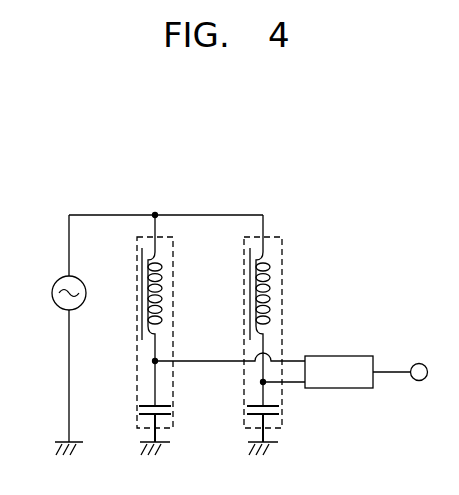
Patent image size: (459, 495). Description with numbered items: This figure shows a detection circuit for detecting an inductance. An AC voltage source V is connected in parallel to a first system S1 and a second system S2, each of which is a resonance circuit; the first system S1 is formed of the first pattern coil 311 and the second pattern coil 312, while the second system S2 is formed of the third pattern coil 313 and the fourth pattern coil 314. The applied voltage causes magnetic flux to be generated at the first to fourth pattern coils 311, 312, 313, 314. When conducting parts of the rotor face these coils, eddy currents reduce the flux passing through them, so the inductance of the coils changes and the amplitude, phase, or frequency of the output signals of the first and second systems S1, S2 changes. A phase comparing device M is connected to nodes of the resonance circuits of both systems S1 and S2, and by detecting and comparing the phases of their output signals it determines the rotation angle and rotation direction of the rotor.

The first pattern coil 311 is at (162, 278).
The second pattern coil 312 is at (162, 310).
The third pattern coil 313 is at (270, 278).
The fourth pattern coil 314 is at (270, 310).
The first system S1 is at (143, 237).
The second system S2 is at (251, 237).
The AC voltage source V is at (60, 328).
The phase comparing device M is at (338, 390).